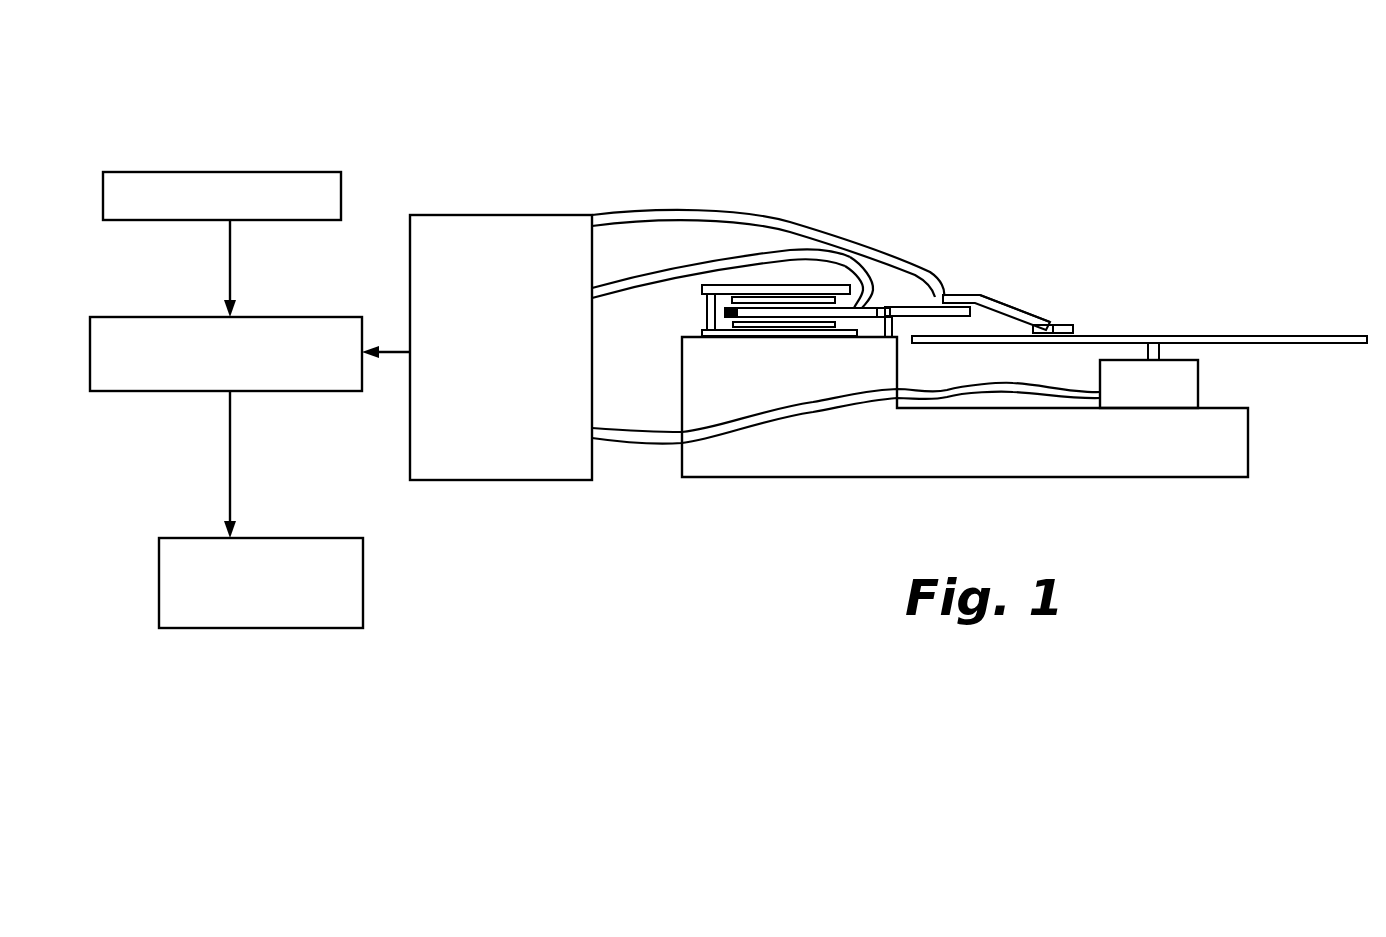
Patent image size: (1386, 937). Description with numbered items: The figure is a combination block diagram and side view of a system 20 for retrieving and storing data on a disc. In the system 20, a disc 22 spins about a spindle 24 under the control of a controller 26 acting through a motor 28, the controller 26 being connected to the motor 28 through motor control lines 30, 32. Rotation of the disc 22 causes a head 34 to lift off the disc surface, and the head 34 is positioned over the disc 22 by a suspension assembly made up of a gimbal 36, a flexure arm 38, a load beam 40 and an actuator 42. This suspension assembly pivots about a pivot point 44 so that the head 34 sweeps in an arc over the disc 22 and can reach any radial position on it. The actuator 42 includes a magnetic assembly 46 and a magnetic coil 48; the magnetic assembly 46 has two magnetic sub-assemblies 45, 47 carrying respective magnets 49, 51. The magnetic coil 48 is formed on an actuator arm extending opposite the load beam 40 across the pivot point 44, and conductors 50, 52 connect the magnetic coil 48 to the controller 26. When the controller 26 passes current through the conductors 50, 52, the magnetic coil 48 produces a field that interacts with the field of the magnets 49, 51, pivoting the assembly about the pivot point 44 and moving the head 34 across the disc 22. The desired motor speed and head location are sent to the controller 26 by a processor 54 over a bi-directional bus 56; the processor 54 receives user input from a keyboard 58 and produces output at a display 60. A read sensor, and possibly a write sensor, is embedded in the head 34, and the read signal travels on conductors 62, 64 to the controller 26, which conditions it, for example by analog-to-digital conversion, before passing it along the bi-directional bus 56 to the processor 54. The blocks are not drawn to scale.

The system 20 is at (952, 84).
The disc 22 is at (1337, 335).
The spindle 24 is at (1162, 349).
The controller 26 is at (512, 481).
The motor 28 is at (1198, 388).
The motor control line 30 is at (606, 442).
The motor control line 32 is at (636, 430).
The head 34 is at (1073, 331).
The gimbal 36 is at (1051, 324).
The flexure arm 38 is at (995, 310).
The load beam 40 is at (930, 298).
The actuator 42 is at (869, 260).
The pivot point 44 is at (891, 306).
The magnetic sub-assembly 45 is at (773, 278).
The magnetic assembly 46 is at (694, 322).
The magnetic sub-assembly 47 is at (745, 346).
The magnetic coil 48 is at (730, 314).
The magnet 49 is at (838, 270).
The conductor 50 is at (672, 270).
The magnet 51 is at (792, 327).
The conductor 52 is at (689, 278).
The processor 54 is at (309, 317).
The bi-directional bus 56 is at (398, 357).
The keyboard 58 is at (265, 172).
The display 60 is at (315, 538).
The conductor 62 is at (721, 208).
The conductor 64 is at (622, 216).